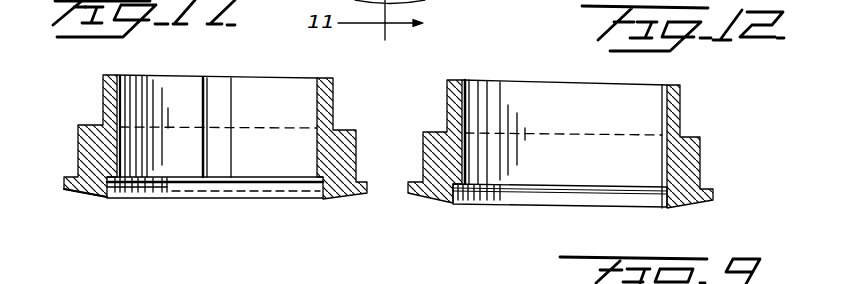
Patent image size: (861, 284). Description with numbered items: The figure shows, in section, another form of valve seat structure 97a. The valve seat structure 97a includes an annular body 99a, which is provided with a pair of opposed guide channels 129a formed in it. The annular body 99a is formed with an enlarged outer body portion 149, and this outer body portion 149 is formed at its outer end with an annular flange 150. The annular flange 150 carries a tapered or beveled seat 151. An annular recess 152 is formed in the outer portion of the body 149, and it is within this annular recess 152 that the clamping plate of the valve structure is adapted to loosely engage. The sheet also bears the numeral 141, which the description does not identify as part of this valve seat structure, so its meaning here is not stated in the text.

In FIG. 11, the annular body 99a is at (103, 80).
In FIG. 11, the guide channels 129a is at (231, 84).
In FIG. 12, the guide channels 129a is at (460, 113).
In FIG. 11, the valve seat structure 97a is at (337, 98).
In FIG. 11, the outer body portion 149 is at (78, 142).
In FIG. 11, the annular flange 150 is at (69, 191).
In FIG. 12, the annular flange 150 is at (708, 201).
In FIG. 11, the beveled seat 151 is at (97, 198).
In FIG. 11, the annular recess 152 is at (322, 193).
In FIG. 12, the annular recess 152 is at (595, 192).
In FIG. 12, the member 141 is at (550, 273).